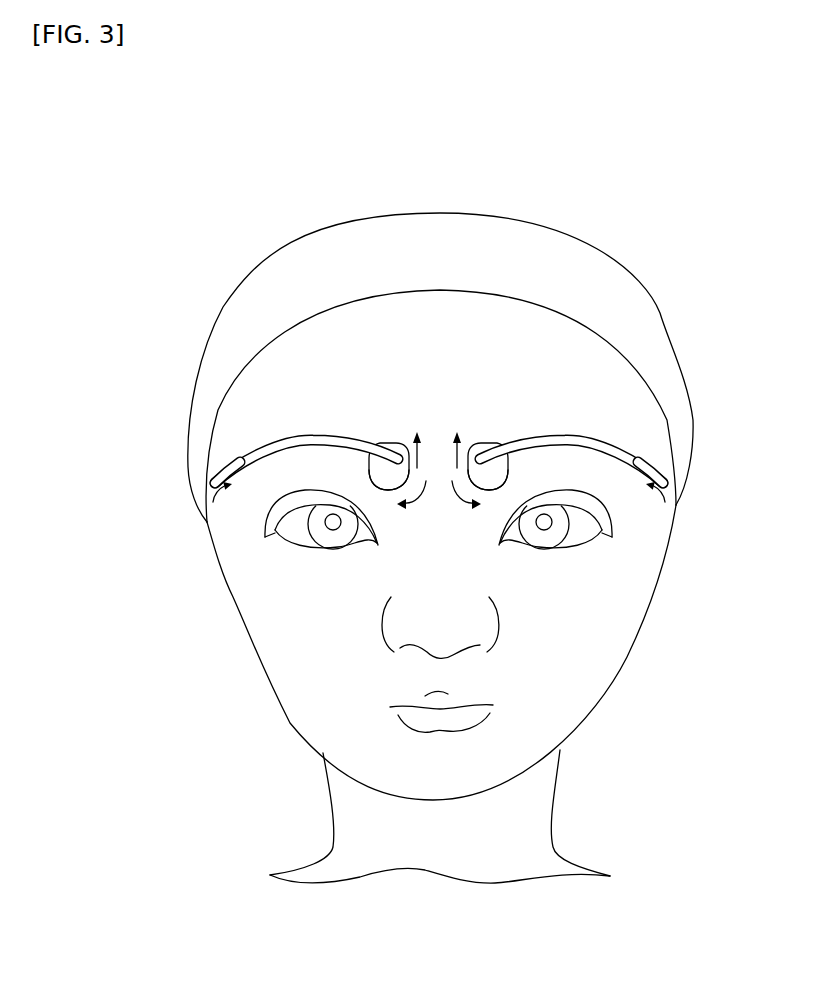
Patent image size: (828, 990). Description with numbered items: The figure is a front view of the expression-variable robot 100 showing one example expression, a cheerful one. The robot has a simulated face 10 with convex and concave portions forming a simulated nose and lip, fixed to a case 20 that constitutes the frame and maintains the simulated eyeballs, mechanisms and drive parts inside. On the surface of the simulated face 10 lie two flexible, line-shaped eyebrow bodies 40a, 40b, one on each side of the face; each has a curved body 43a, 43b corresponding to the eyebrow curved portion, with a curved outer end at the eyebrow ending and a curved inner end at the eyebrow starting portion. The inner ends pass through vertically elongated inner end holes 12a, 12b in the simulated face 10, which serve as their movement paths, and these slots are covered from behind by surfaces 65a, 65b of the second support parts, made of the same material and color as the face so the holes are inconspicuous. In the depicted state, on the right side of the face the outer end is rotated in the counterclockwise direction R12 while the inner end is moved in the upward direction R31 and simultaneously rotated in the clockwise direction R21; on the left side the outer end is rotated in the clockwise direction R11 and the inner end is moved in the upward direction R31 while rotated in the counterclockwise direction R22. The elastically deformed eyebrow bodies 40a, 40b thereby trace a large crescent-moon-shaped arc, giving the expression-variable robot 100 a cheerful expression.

The expression-variable robot 100 is at (636, 181).
The case 20 is at (374, 216).
The simulated face 10 is at (625, 660).
The eyebrow body 40a is at (317, 433).
The eyebrow body 40b is at (575, 431).
The body 43a is at (261, 448).
The body 43b is at (614, 448).
The inner end hole 12a is at (382, 444).
The inner end hole 12b is at (490, 444).
The surface 65a is at (380, 474).
The surface 65b is at (497, 474).
The upward direction R31 is at (439, 436).
The clockwise direction R21 is at (406, 507).
The counterclockwise direction R22 is at (474, 507).
The counterclockwise direction R12 is at (235, 508).
The clockwise direction R11 is at (649, 508).